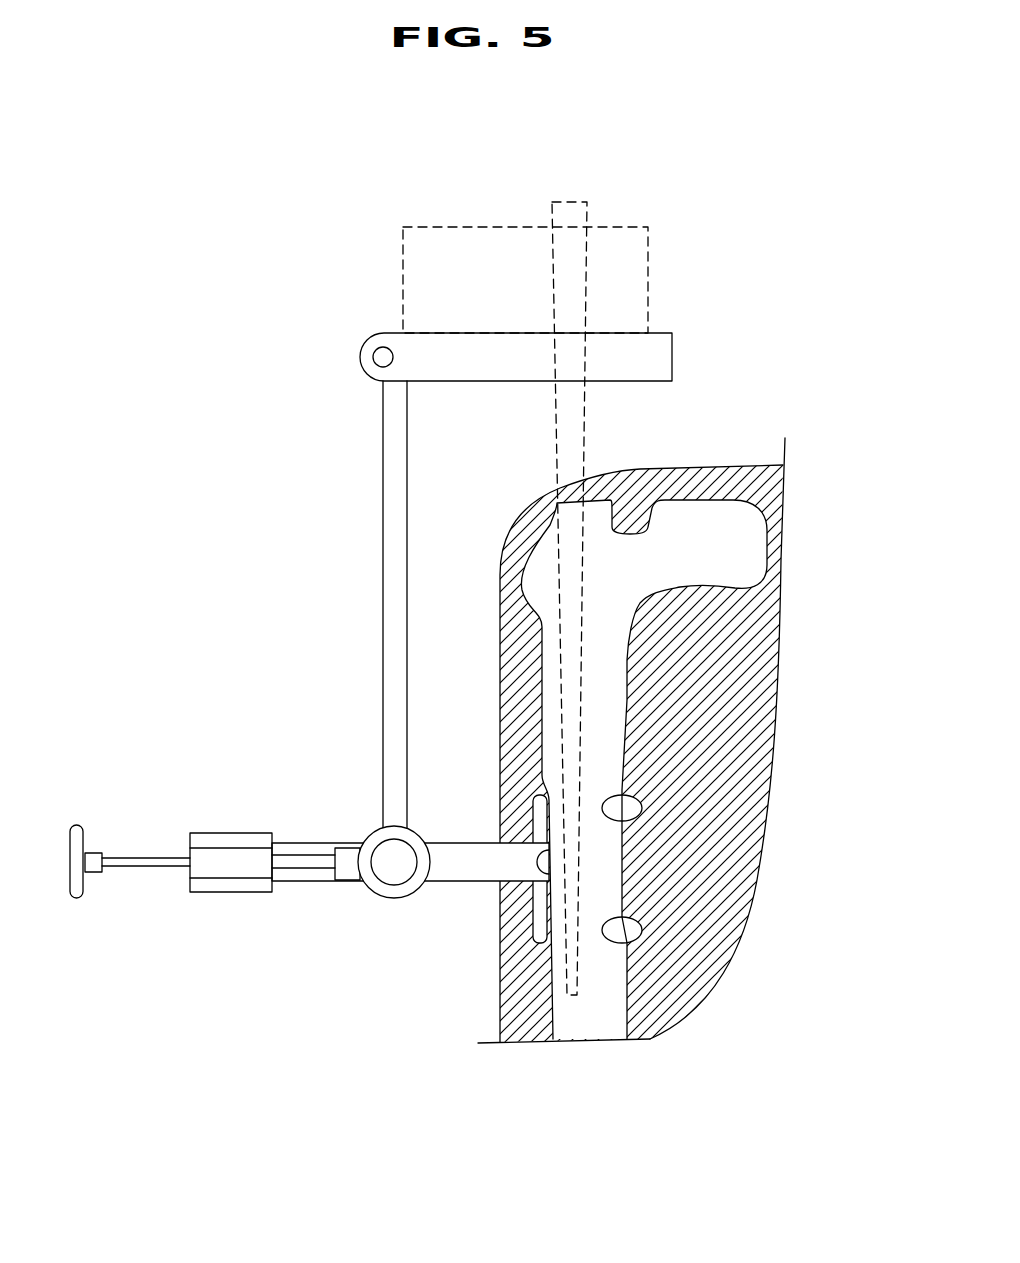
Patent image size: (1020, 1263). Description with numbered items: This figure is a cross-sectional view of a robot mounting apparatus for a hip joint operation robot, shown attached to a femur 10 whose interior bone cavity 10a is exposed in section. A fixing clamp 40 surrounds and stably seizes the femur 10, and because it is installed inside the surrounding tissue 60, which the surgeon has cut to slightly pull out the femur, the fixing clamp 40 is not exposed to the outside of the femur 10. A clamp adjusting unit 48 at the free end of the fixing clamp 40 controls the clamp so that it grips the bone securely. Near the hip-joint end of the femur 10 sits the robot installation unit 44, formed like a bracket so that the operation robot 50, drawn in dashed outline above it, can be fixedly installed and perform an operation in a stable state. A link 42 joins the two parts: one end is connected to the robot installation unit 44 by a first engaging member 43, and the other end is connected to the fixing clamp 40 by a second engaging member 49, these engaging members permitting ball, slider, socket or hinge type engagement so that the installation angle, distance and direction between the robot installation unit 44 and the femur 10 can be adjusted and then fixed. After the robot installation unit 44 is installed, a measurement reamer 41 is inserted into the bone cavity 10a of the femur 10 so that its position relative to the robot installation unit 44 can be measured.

The femur 10 is at (602, 993).
The medullary cavity 10a is at (757, 543).
The fixing clamp 40 is at (480, 873).
The measurement reamer 41 is at (587, 217).
The link 42 is at (392, 752).
The first engaging member 43 is at (387, 360).
The robot installation unit 44 is at (365, 352).
The clamp adjusting unit 48 is at (93, 865).
The second engaging member 49 is at (372, 893).
The operation robot 50 is at (648, 285).
The tissue 60 is at (520, 1020).